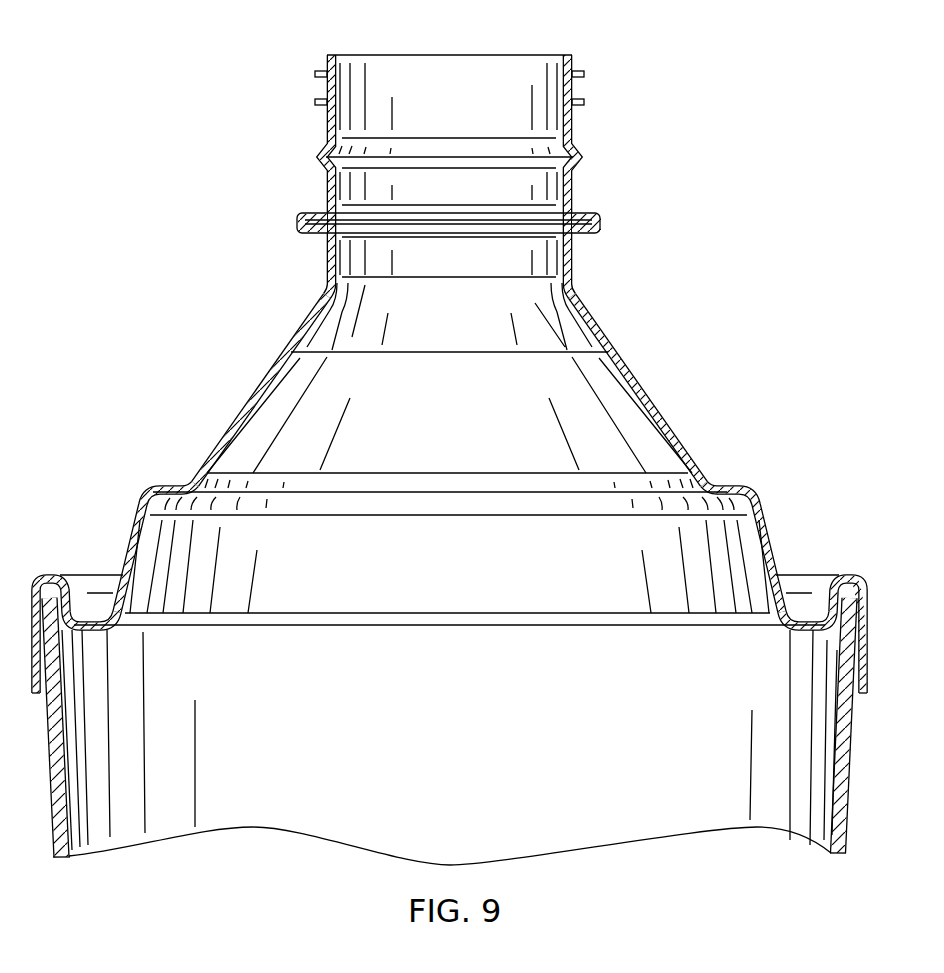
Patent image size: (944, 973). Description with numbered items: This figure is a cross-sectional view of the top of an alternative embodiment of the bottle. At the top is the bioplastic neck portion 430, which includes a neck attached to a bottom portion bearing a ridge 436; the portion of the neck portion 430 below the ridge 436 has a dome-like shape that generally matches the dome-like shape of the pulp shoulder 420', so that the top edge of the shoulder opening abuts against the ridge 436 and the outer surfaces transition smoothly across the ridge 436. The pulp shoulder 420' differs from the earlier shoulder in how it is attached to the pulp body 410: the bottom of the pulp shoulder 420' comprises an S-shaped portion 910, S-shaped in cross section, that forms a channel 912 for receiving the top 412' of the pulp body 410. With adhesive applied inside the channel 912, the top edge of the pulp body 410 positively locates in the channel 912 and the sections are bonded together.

The pulp body 410 is at (832, 777).
The top of the pulp body 412' is at (790, 725).
The pulp shoulder 420' is at (423, 502).
The bioplastic neck portion 430 is at (293, 328).
The ridge 436 is at (273, 357).
The S-shaped portion 910 is at (840, 573).
The channel 912 is at (75, 578).